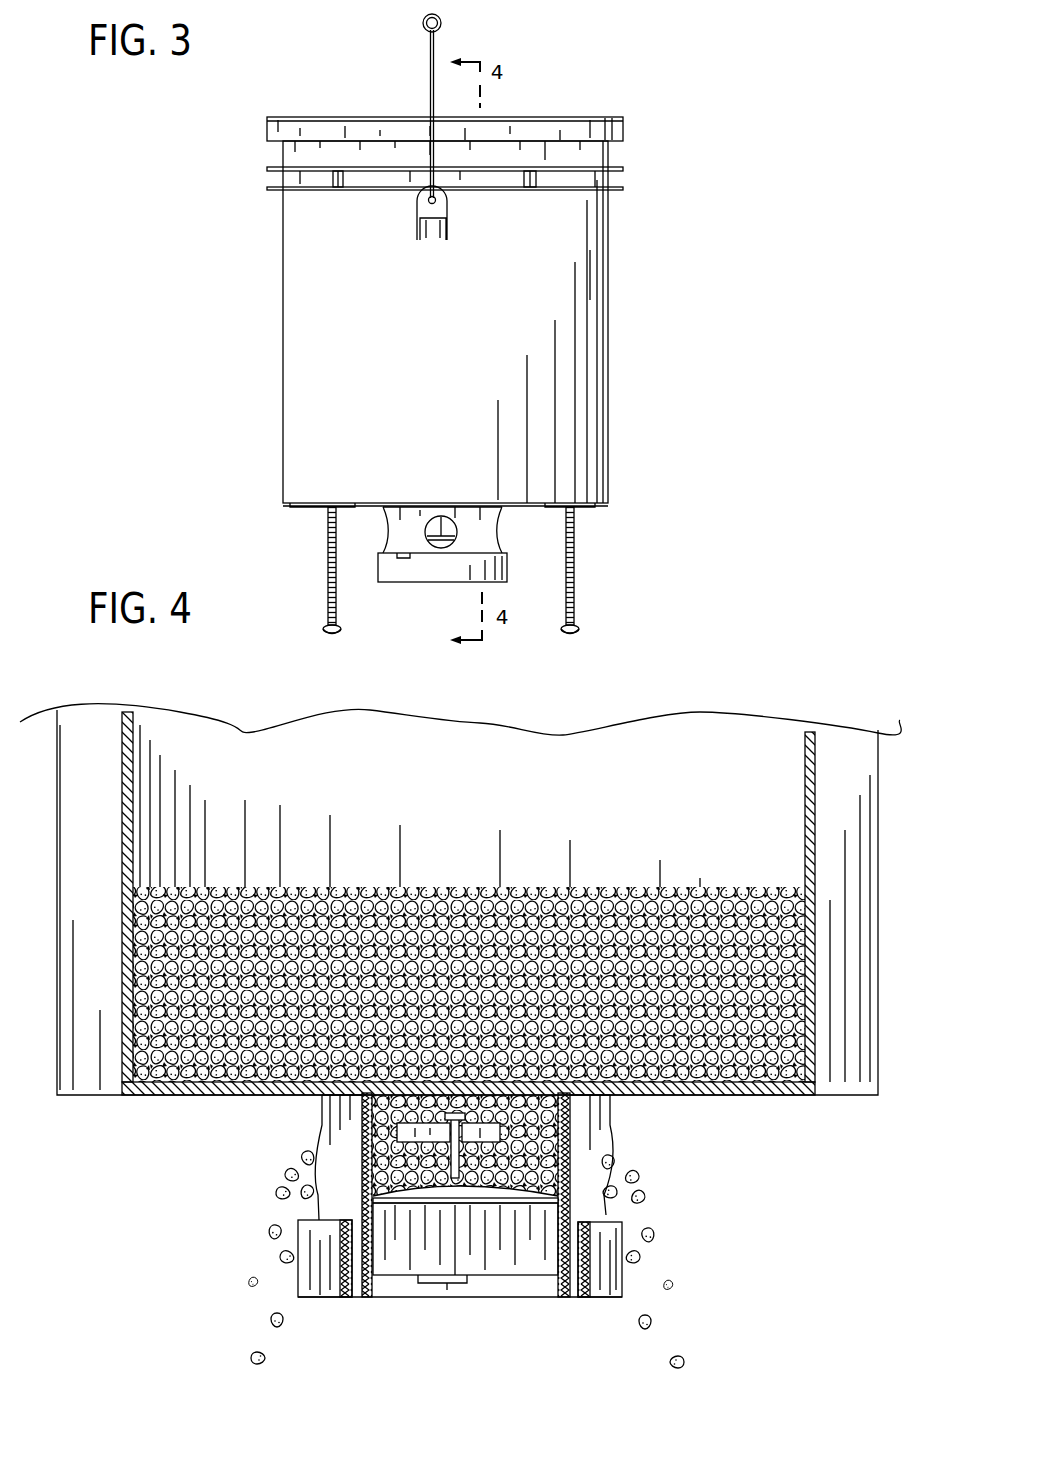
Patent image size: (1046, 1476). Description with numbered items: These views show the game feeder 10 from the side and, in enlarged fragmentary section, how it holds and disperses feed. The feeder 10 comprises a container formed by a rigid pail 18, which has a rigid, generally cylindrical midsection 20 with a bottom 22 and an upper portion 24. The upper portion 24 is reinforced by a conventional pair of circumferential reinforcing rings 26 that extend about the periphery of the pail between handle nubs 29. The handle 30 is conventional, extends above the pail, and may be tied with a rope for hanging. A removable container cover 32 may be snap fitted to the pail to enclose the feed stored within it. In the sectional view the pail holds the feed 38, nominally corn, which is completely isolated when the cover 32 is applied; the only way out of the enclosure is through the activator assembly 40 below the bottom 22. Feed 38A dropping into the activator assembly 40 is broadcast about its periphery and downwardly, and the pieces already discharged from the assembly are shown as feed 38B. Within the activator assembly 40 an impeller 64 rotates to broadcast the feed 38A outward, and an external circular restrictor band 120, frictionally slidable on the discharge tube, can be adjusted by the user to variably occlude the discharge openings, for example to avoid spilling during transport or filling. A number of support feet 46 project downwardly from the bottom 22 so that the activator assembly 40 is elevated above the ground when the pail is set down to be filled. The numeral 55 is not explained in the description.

In FIG. 3, the feeder 10 is at (247, 256).
In FIG. 4, the feeder 10 is at (373, 798).
In FIG. 3, the rigid pail 18 is at (606, 403).
In FIG. 4, the rigid pail 18 is at (122, 748).
In FIG. 3, the midsection 20 is at (590, 270).
In FIG. 3, the bottom 22 is at (310, 500).
In FIG. 4, the bottom 22 is at (141, 1097).
In FIG. 3, the upper portion 24 is at (582, 163).
In FIG. 3, the reinforcing rings 26 is at (483, 180).
In FIG. 3, the handle nubs 29 is at (420, 208).
In FIG. 3, the handle 30 is at (453, 36).
In FIG. 3, the container cover 32 is at (571, 110).
In FIG. 4, the feed 38 is at (520, 880).
In FIG. 4, the feed dropping into the activator assembly 38A is at (562, 1152).
In FIG. 4, the discharged feed pieces 38B is at (270, 1236).
In FIG. 3, the activator assembly 40 is at (523, 558).
In FIG. 3, the support feet 46 is at (578, 548).
In FIG. 4, the discharge neck 55 is at (313, 1135).
In FIG. 4, the impeller 64 is at (438, 1222).
In FIG. 4, the restrictor band 120 is at (603, 1280).